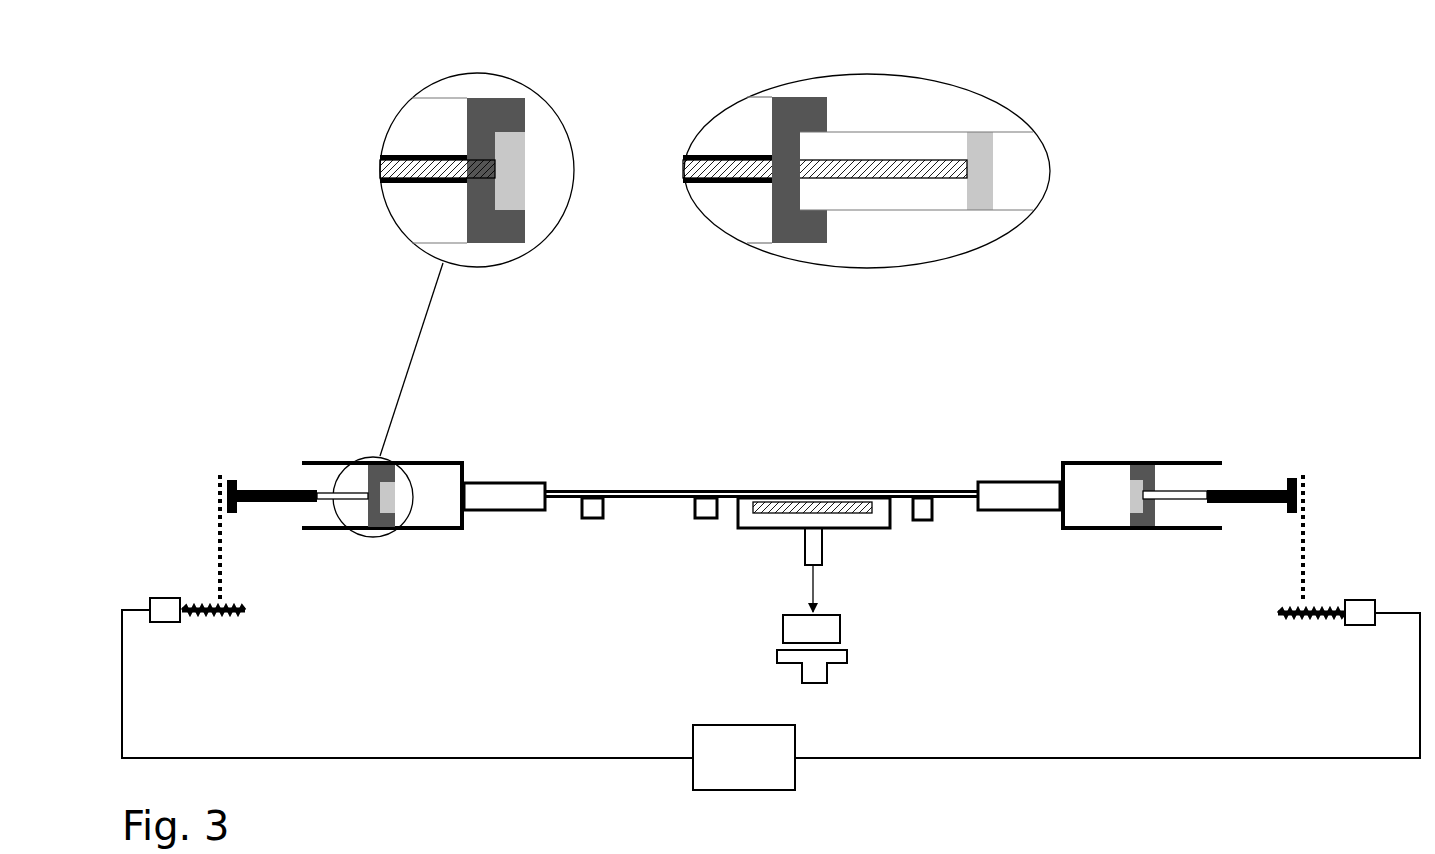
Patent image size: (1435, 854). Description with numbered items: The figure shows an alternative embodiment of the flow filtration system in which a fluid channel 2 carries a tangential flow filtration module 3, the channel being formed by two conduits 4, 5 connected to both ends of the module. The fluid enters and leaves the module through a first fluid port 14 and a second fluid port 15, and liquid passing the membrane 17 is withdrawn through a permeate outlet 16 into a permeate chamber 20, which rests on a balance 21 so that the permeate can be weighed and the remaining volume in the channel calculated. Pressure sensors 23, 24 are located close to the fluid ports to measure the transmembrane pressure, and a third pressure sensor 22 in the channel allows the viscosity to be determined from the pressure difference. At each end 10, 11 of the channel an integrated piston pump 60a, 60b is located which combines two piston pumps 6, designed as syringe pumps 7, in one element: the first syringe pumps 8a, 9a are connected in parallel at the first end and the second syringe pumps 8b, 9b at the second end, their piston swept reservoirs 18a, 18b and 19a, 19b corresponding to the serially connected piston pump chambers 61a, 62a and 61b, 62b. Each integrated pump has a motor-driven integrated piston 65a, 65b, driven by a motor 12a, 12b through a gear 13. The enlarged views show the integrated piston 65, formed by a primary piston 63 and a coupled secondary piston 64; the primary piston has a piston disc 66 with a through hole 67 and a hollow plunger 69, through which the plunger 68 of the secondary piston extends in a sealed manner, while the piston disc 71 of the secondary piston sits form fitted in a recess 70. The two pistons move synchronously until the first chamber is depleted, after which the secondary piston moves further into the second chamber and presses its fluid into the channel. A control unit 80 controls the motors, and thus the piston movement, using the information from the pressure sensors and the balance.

The fluid channel 2 is at (732, 490).
The tangential flow filtration module 3 is at (812, 485).
The conduit 4 is at (687, 490).
The conduit 5 is at (902, 490).
The piston pump 6 is at (402, 527).
The syringe pump 7 is at (450, 482).
The first syringe pump 8a is at (537, 230).
The second syringe pump 8b is at (1142, 495).
The first syringe pump 9a is at (510, 490).
The second syringe pump 9b is at (995, 490).
The first end 10 is at (567, 492).
The second end 11 is at (938, 490).
The motor 12a is at (165, 623).
The motor 12b is at (1355, 627).
The gear 13 is at (235, 613).
The first fluid port 14 is at (747, 490).
The second fluid port 15 is at (882, 490).
The permeate outlet 16 is at (807, 545).
The membrane 17 is at (843, 512).
The piston swept reservoir 18a is at (432, 475).
The piston swept reservoir 18b is at (1117, 510).
The piston swept reservoir 19a is at (475, 503).
The piston swept reservoir 19b is at (1032, 503).
The permeate chamber 20 is at (832, 630).
The balance 21 is at (838, 657).
The third pressure sensor 22 is at (592, 513).
The pressure sensor 23 is at (705, 513).
The pressure sensor 24 is at (922, 515).
The integrated piston pump 60a is at (397, 440).
The integrated piston pump 60b is at (1180, 457).
The piston pump chamber 61a is at (740, 120).
The piston pump chamber 61b is at (1090, 520).
The piston pump chamber 62a is at (908, 195).
The piston pump chamber 62b is at (997, 503).
The primary piston 63 is at (463, 127).
The secondary piston 64 is at (527, 152).
The integrated piston 65 is at (398, 98).
The integrated piston 65a is at (372, 513).
The integrated piston 65b is at (1160, 480).
The piston disc 66 is at (797, 97).
The through hole 67 is at (800, 158).
The plunger 68 is at (462, 172).
The plunger 69 is at (417, 182).
The recess 70 is at (810, 140).
The piston disc 71 is at (518, 180).
The control unit 80 is at (744, 757).